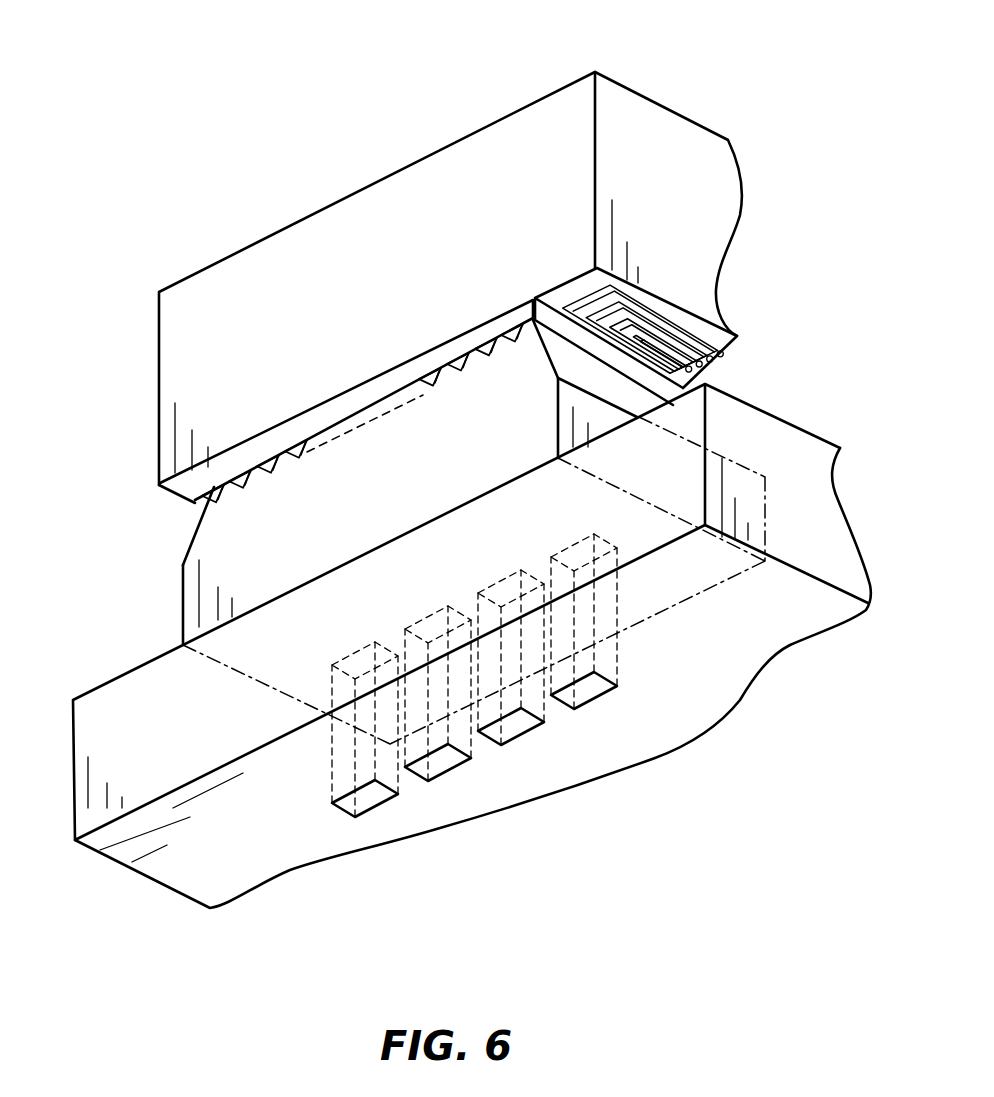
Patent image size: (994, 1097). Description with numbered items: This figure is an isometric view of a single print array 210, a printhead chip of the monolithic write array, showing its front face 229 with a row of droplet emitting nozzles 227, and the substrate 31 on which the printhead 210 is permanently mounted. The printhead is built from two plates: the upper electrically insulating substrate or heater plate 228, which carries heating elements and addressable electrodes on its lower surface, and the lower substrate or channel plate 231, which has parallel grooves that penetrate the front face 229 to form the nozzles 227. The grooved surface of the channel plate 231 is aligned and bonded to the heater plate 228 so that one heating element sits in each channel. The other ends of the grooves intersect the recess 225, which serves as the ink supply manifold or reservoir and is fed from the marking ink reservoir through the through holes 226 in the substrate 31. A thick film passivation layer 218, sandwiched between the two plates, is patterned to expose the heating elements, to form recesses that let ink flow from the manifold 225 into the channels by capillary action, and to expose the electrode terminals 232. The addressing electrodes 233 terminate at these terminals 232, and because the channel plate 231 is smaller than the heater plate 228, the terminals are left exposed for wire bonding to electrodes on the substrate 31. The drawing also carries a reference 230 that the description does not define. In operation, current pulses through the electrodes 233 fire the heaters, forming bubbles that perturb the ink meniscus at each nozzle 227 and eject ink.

The print array 210 is at (376, 52).
The upper electrically insulating substrate 228 is at (643, 123).
The receptacle mating face 230 is at (587, 280).
The addressing electrodes 233 is at (655, 310).
The electrode terminals 232 is at (728, 352).
The thick film passivation layer 218 is at (380, 385).
The droplet emitting nozzles 227 is at (288, 457).
The channel plate 231 is at (195, 532).
The front face 229 is at (266, 540).
The recess 225 is at (613, 588).
The through holes 226 is at (365, 800).
The substrate 31 is at (242, 880).